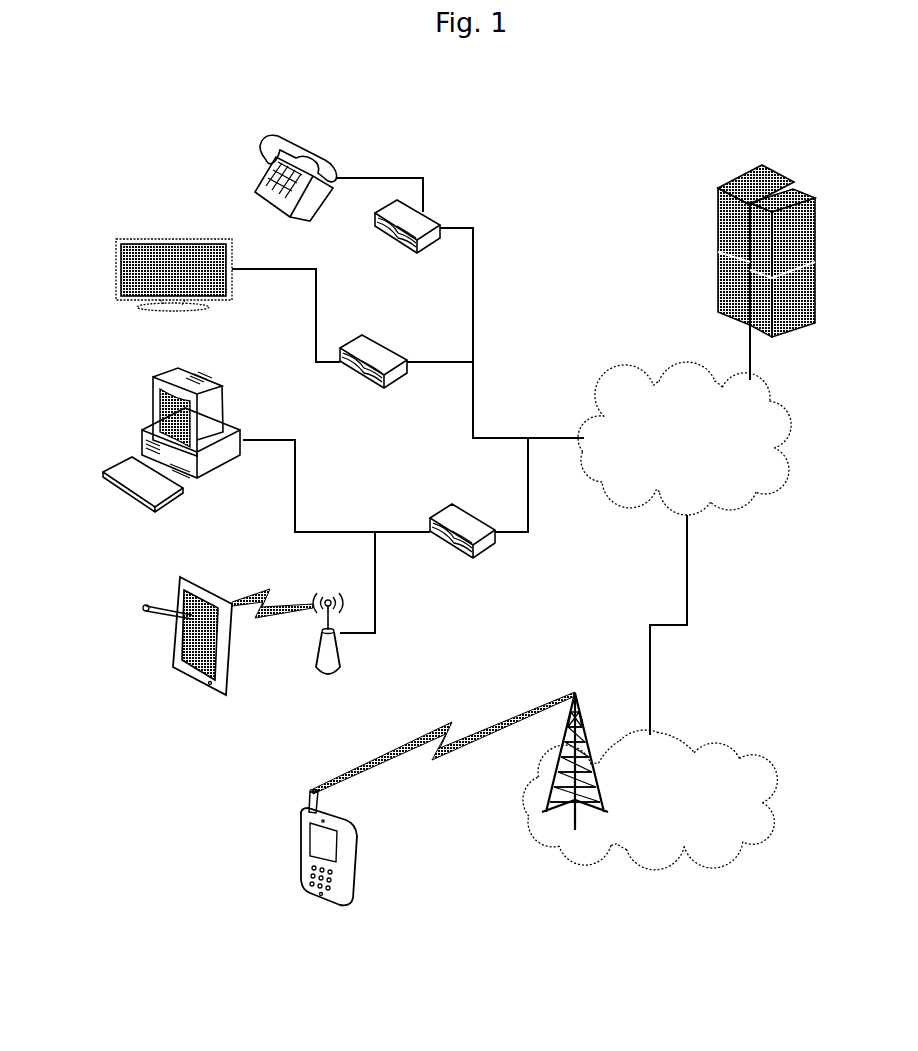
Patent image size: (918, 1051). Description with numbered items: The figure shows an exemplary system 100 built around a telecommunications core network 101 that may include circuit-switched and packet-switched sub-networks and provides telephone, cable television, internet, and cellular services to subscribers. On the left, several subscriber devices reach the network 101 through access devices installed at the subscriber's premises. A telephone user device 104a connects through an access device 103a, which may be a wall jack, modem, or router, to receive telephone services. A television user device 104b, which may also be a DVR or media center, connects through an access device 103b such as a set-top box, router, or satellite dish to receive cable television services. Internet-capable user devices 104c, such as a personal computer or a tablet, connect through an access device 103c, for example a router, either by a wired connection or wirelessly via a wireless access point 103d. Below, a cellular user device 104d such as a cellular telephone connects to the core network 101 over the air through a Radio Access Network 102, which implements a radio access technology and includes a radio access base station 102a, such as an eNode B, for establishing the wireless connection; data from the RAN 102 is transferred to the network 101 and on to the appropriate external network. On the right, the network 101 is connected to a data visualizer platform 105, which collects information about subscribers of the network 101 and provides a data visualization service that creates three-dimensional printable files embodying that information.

The system 100 is at (654, 115).
The network 101 is at (684, 438).
The Radio Access Network (RAN) 102 is at (650, 800).
The radio access base station 102a is at (590, 712).
The access device 103a is at (418, 256).
The access device 103b is at (378, 390).
The access device 103c is at (455, 559).
The wireless access point 103d is at (342, 664).
The user device 104a is at (252, 192).
The user device 104b is at (116, 285).
The user device 104c is at (104, 471).
The user device 104d is at (300, 846).
The data visualizer platform 105 is at (816, 193).